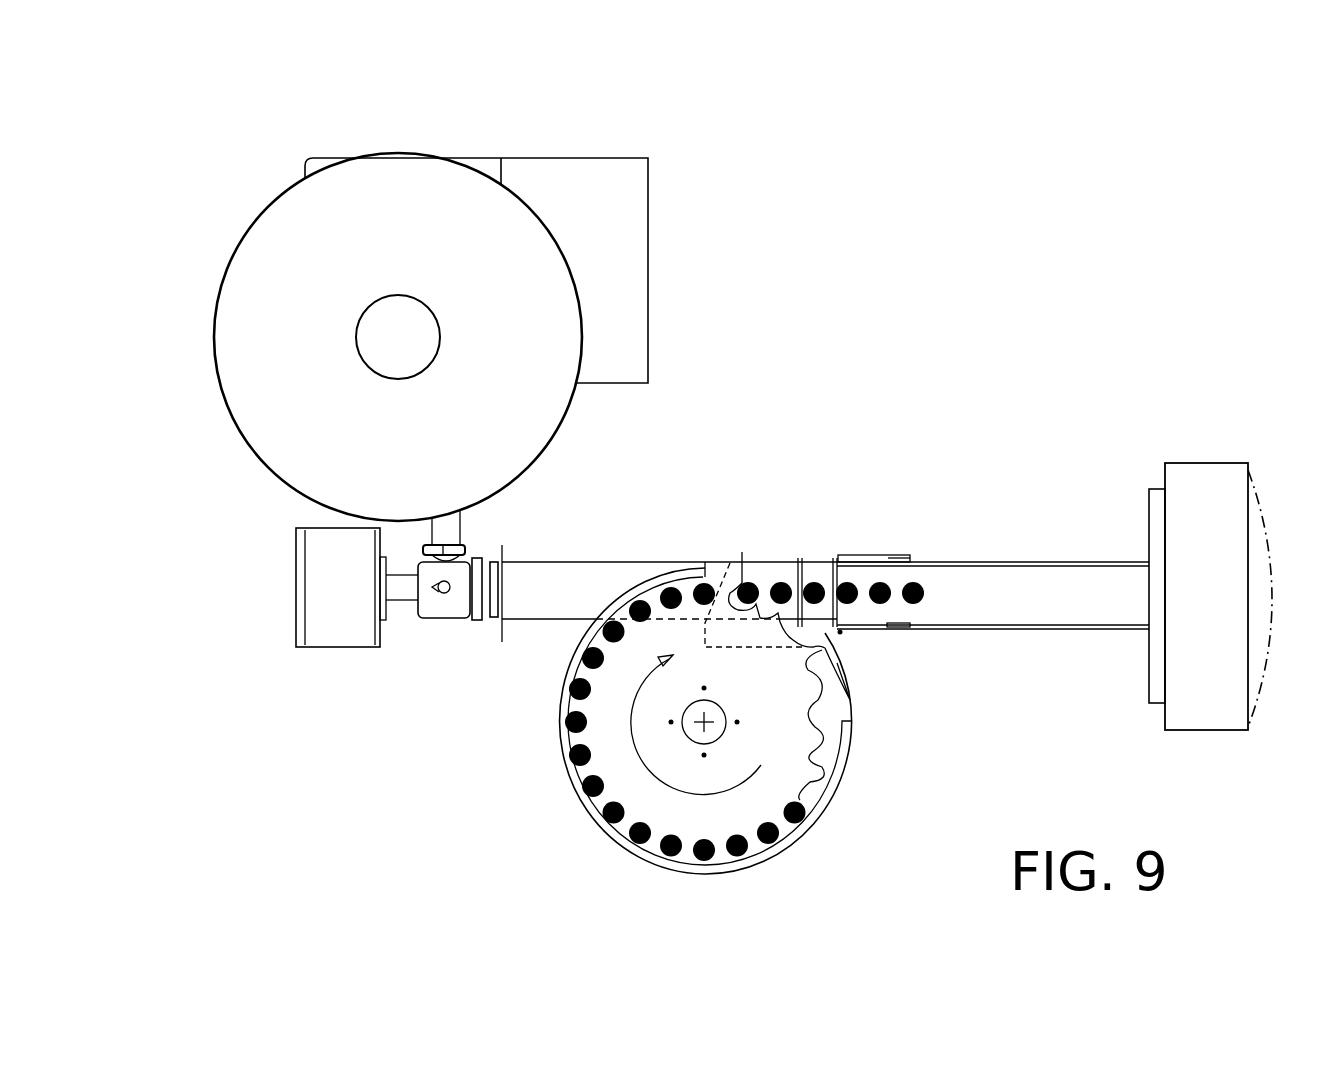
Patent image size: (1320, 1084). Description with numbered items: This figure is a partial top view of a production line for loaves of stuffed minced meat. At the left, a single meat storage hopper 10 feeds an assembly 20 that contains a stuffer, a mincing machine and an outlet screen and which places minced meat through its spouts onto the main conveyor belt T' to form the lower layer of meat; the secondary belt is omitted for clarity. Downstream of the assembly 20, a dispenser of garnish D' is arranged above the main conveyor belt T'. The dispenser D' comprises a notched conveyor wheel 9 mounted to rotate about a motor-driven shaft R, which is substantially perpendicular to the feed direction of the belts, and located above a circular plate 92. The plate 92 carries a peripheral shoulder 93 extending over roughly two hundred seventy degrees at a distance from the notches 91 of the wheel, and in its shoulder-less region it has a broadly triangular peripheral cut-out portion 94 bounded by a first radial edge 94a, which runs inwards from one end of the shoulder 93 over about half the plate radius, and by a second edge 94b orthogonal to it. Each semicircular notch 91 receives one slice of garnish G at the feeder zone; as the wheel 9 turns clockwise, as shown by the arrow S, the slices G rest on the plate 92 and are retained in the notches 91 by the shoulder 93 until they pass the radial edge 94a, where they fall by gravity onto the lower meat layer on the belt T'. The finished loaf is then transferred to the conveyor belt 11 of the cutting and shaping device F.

The meat storage hopper 10 is at (215, 313).
The rotation direction of drum A' is at (357, 107).
The assembly 20 is at (432, 612).
The main conveyor belt T' is at (713, 559).
The conveyor belt 11 is at (1067, 563).
The cutting and shaping device F is at (1155, 658).
The notched conveyor wheel 9 is at (706, 739).
The peripheral shoulder 93 is at (617, 840).
The circular plate 92 is at (842, 708).
The notches 91 is at (805, 782).
The shaft R is at (650, 772).
The arrow S is at (630, 703).
The dispenser of garnish D' is at (532, 844).
The slices of garnish G is at (743, 552).
The first radial edge 94a is at (730, 560).
The peripheral cut-out portion 94 is at (850, 687).
The second edge 94b is at (813, 647).